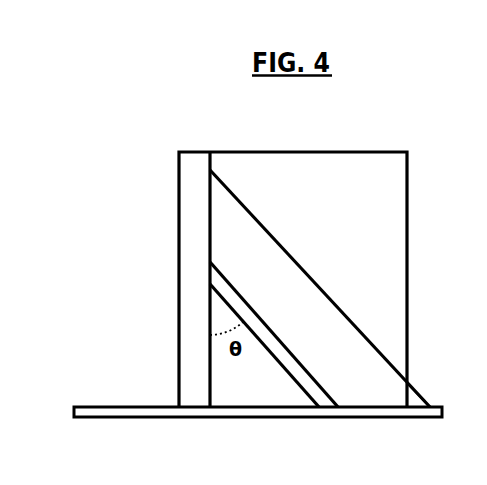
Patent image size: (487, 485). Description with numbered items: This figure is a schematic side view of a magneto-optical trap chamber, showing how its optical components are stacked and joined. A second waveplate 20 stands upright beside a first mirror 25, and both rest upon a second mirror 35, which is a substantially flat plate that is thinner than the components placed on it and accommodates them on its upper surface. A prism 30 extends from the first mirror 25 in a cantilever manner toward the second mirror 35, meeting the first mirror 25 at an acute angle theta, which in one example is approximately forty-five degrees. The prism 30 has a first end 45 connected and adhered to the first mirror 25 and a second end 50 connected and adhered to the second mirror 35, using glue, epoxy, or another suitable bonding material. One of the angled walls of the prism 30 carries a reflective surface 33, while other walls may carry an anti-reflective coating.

The second waveplate 20 is at (397, 208).
The first mirror 25 is at (187, 311).
The prism 30 is at (325, 322).
The reflective surface 33 is at (290, 294).
The second mirror 35 is at (372, 418).
The first end 45 is at (218, 208).
The second end 50 is at (415, 400).